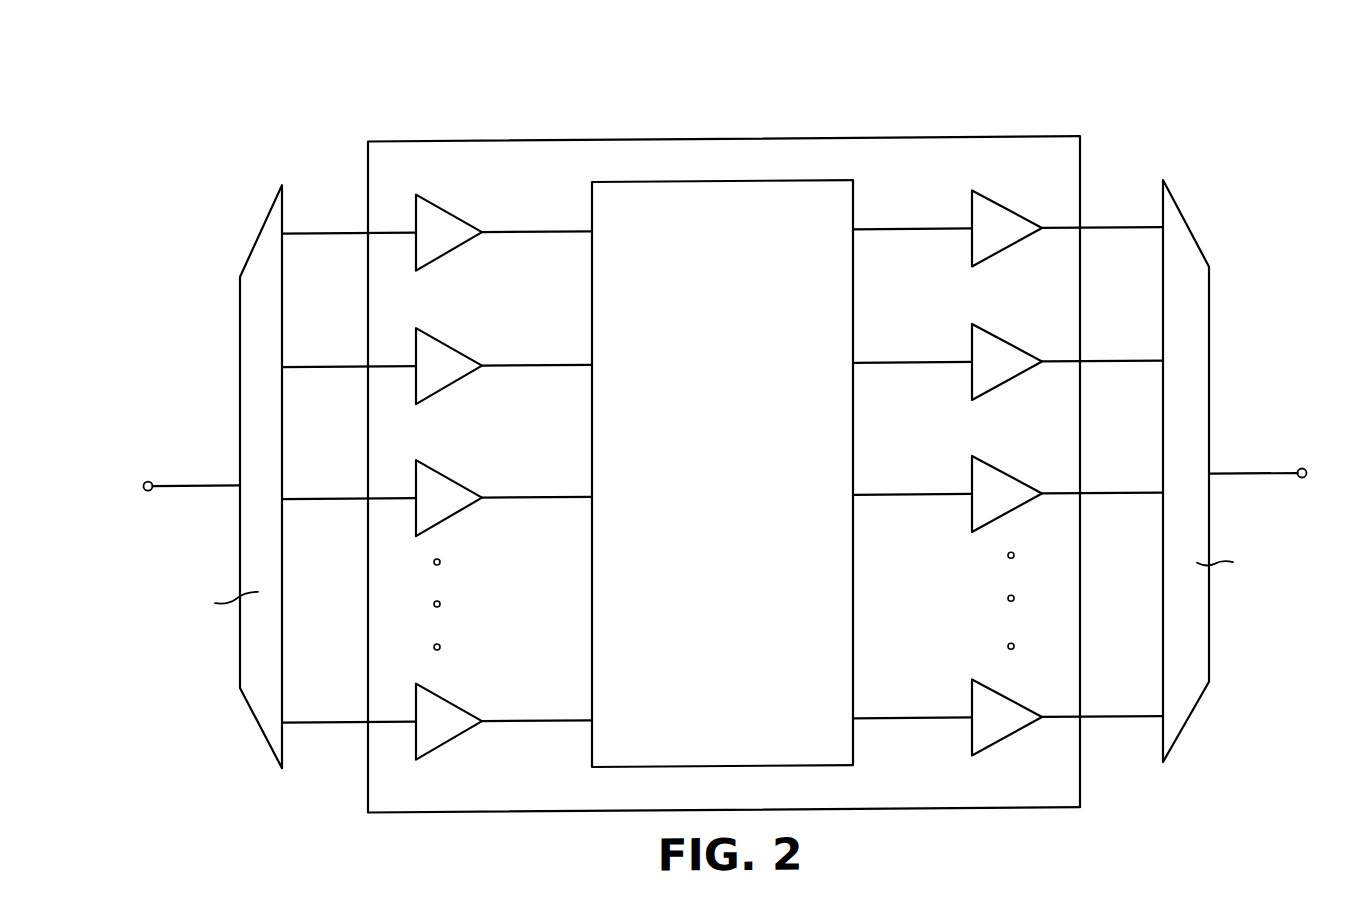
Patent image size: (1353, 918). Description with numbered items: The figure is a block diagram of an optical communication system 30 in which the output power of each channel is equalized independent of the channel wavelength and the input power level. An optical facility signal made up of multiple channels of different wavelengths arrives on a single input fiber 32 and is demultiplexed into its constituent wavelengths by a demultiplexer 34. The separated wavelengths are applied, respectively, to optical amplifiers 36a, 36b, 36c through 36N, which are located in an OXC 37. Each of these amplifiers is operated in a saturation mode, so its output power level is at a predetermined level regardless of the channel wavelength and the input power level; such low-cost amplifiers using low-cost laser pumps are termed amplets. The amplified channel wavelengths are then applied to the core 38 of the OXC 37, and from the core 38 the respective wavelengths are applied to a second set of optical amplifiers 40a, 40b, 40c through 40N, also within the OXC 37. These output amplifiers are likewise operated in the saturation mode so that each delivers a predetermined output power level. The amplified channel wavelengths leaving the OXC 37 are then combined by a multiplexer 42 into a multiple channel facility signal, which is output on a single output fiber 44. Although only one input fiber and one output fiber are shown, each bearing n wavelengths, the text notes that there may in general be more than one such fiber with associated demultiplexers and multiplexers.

The optical communication system 30 is at (787, 78).
The single fiber 32 is at (190, 469).
The demultiplexer 34 is at (258, 234).
The optical amplifier 36a is at (440, 206).
The optical amplifier 36b is at (440, 335).
The optical amplifier 36c is at (443, 473).
The optical amplifier 36N is at (447, 697).
The OXC 37 is at (513, 141).
The core 38 is at (855, 214).
The optical amplifier 40a is at (993, 210).
The optical amplifier 40b is at (993, 343).
The optical amplifier 40c is at (997, 473).
The optical amplifier 40N is at (1000, 698).
The multiplexer 42 is at (1193, 241).
The single fiber 44 is at (1245, 479).